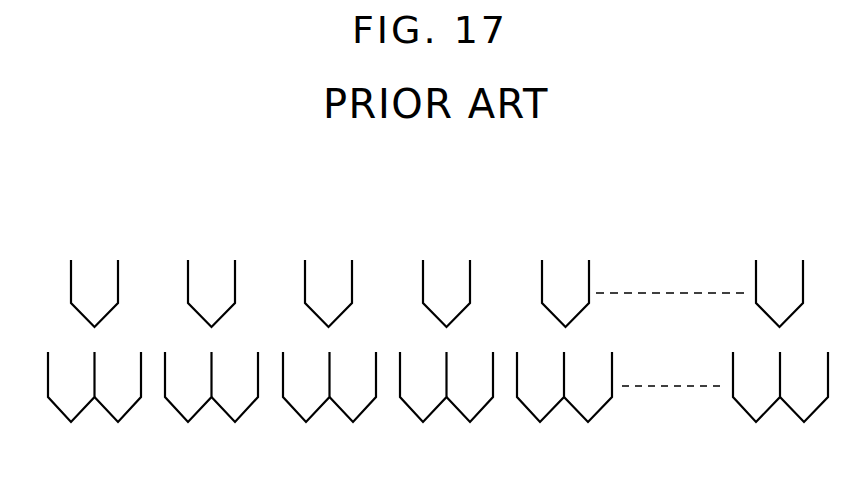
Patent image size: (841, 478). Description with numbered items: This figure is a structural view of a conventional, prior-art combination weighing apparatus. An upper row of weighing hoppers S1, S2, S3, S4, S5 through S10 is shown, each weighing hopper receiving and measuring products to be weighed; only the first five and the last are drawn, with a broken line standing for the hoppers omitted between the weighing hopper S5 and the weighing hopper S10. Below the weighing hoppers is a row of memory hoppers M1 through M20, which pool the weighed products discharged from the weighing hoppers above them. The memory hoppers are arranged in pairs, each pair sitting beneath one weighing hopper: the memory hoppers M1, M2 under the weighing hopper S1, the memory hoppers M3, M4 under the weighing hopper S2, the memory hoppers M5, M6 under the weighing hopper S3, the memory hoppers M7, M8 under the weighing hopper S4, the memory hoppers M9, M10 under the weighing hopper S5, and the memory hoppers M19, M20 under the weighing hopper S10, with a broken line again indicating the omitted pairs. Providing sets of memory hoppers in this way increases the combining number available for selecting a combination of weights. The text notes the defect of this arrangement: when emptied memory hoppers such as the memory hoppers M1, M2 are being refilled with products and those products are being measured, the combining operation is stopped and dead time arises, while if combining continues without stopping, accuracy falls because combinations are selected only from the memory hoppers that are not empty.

The weighing hopper S1 is at (94, 293).
The weighing hopper S2 is at (211, 293).
The weighing hopper S3 is at (328, 293).
The weighing hopper S4 is at (446, 293).
The weighing hopper S5 is at (565, 293).
The weighing hopper S10 is at (779, 293).
The memory hopper M1 is at (71, 387).
The memory hopper M2 is at (118, 387).
The memory hopper M3 is at (188, 387).
The memory hopper M4 is at (235, 387).
The memory hopper M5 is at (306, 387).
The memory hopper M6 is at (353, 387).
The memory hopper M7 is at (423, 387).
The memory hopper M8 is at (470, 387).
The memory hopper M9 is at (540, 387).
The memory hopper M10 is at (588, 387).
The memory hopper M19 is at (756, 387).
The memory hopper M20 is at (804, 387).